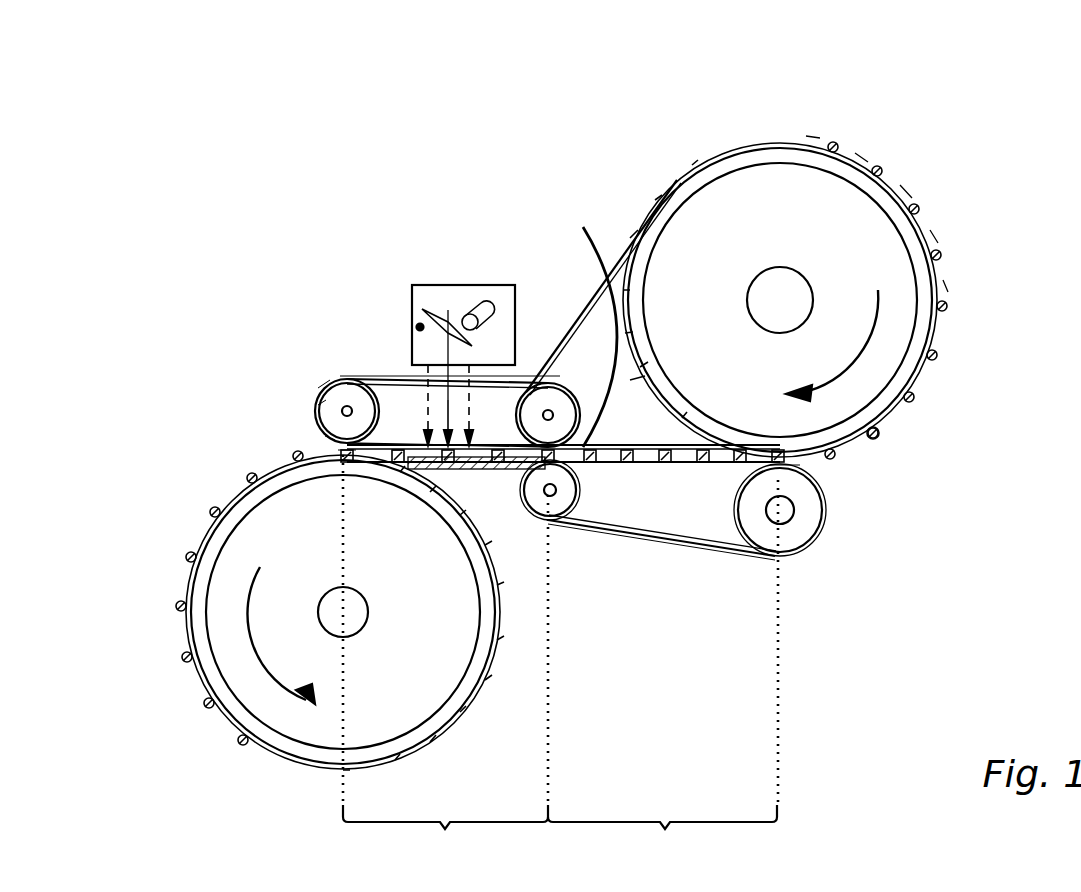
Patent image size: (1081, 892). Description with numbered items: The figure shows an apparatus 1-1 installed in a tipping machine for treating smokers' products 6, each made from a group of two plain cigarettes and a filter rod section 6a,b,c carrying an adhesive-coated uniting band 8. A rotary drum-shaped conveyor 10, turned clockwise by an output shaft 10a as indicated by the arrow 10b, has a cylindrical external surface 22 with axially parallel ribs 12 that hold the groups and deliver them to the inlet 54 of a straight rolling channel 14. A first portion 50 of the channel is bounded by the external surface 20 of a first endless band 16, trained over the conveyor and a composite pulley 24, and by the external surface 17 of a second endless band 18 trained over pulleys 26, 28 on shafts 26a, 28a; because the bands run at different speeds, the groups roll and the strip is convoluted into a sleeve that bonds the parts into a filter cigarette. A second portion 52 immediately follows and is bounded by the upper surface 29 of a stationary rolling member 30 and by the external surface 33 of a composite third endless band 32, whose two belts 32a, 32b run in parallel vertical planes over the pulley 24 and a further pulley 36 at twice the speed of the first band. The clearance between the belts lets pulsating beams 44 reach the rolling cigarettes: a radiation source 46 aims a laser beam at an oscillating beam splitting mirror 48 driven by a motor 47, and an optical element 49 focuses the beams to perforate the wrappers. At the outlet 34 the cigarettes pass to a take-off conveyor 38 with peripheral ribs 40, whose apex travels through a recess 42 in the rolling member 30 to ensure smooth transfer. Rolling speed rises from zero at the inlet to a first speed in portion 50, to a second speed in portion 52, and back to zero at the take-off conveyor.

The apparatus 1-1 is at (438, 106).
The smokers' product 6 is at (186, 557).
The plain cigarettes and filter rod section 6a,b,c is at (876, 438).
The uniting band 8 is at (895, 192).
The rotary drum-shaped conveyor 10 is at (895, 370).
The output shaft 10a is at (773, 290).
The arrow 10b is at (867, 355).
The ribs 12 is at (906, 400).
The straight rolling channel 14 is at (650, 462).
The first endless band 16 is at (577, 325).
The external surface of second band 17 is at (590, 321).
The second endless band 18 is at (745, 556).
The external surface of first band 20 is at (668, 182).
The cylindrical external surface 22 is at (636, 376).
The composite pulley 24 is at (555, 410).
The pulley 26 is at (798, 530).
The shaft 26a is at (785, 528).
The pulley 28 is at (560, 505).
The shaft 28a is at (544, 512).
The upper surface of rolling member 29 is at (398, 438).
The stationary rolling member 30 is at (450, 470).
The composite third endless band 32 is at (351, 378).
The belt of composite band 32a is at (318, 405).
The belt of composite band 32b is at (330, 437).
The external surface of third band 33 is at (322, 385).
The outlet 34 is at (345, 450).
The further pulley 36 is at (330, 413).
The take-off conveyor 38 is at (420, 706).
The peripheral ribs 40 is at (305, 760).
The recess 42 is at (349, 455).
The pulsating beams 44 is at (474, 418).
The radiation source 46 is at (417, 326).
The motor 47 is at (478, 303).
The oscillating beam splitting mirror 48 is at (438, 318).
The optical element 49 is at (470, 378).
The first portion of rolling channel 50 is at (662, 832).
The second portion of rolling channel 52 is at (445, 832).
The inlet 54 is at (790, 463).